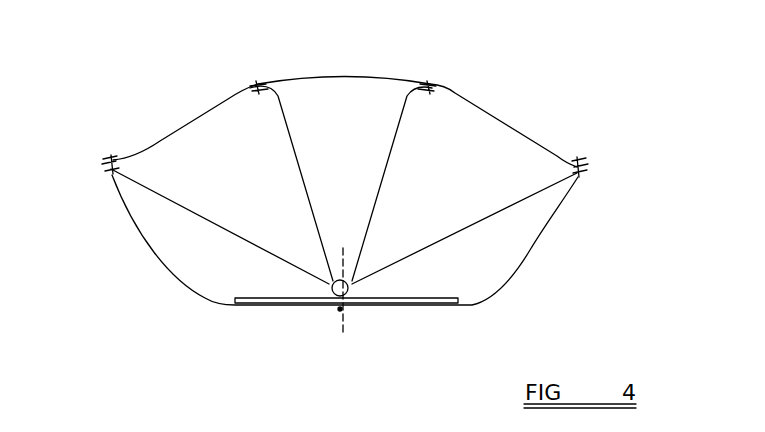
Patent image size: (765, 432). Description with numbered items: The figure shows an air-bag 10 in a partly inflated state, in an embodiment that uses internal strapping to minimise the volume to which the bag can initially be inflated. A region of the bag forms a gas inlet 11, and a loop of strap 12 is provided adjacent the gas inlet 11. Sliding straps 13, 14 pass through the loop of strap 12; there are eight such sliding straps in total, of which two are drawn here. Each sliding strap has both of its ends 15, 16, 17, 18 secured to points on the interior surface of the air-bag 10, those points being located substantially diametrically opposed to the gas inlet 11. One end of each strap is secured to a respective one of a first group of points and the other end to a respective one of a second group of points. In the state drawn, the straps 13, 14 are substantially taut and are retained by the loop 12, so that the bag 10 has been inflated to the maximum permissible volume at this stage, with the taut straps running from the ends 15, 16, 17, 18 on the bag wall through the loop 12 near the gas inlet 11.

The air-bag 10 is at (516, 123).
The gas inlet 11 is at (383, 316).
The loop of strap 12 is at (325, 305).
The sliding strap 13 is at (291, 134).
The sliding strap 14 is at (394, 138).
The strap end 15 is at (112, 157).
The strap end 16 is at (256, 82).
The strap end 17 is at (431, 80).
The strap end 18 is at (579, 163).